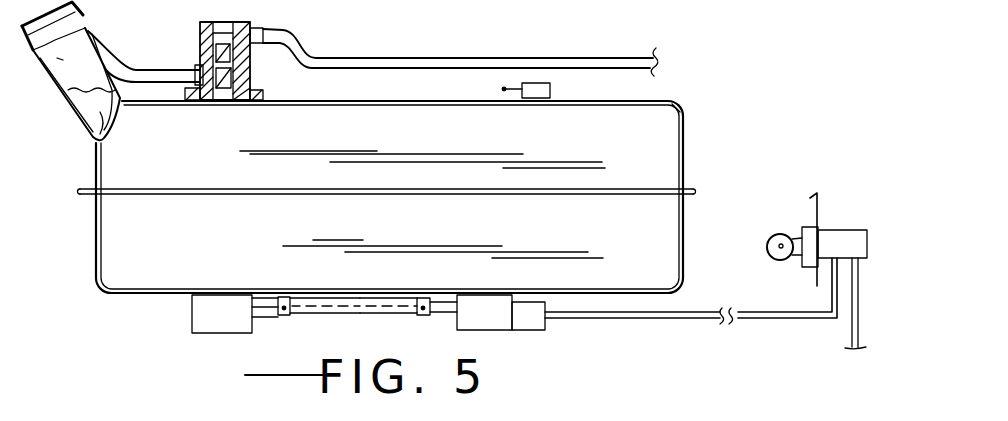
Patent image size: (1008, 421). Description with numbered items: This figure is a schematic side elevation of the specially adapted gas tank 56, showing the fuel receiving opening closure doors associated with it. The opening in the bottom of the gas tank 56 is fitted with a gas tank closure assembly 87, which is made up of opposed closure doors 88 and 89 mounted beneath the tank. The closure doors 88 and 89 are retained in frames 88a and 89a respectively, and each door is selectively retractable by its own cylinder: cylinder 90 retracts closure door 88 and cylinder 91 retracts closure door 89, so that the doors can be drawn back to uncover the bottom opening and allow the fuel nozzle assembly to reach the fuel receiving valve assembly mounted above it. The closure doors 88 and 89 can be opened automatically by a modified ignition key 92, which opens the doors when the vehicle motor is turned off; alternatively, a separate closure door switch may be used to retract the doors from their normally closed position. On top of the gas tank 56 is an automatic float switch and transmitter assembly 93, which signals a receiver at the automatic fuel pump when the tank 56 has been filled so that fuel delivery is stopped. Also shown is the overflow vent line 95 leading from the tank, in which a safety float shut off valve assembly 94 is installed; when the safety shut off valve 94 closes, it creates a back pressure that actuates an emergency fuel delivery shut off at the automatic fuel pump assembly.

The gas tank 56 is at (683, 113).
The gas tank closure assembly 87 is at (560, 343).
The closure door 88 is at (285, 297).
The frame 88a is at (320, 307).
The closure door 89 is at (418, 298).
The frame 89a is at (372, 308).
The cylinder 90 is at (205, 320).
The cylinder 91 is at (478, 318).
The modified ignition key 92 is at (800, 228).
The automatic float switch and transmitter assembly 93 is at (551, 85).
The safety float shut off valve assembly 94 is at (268, 23).
The overflow vent line 95 is at (467, 58).